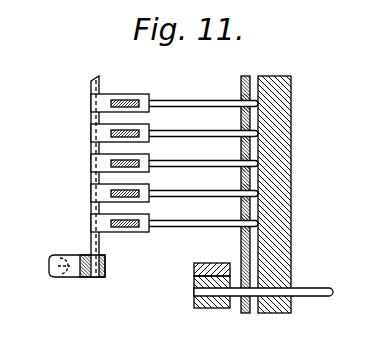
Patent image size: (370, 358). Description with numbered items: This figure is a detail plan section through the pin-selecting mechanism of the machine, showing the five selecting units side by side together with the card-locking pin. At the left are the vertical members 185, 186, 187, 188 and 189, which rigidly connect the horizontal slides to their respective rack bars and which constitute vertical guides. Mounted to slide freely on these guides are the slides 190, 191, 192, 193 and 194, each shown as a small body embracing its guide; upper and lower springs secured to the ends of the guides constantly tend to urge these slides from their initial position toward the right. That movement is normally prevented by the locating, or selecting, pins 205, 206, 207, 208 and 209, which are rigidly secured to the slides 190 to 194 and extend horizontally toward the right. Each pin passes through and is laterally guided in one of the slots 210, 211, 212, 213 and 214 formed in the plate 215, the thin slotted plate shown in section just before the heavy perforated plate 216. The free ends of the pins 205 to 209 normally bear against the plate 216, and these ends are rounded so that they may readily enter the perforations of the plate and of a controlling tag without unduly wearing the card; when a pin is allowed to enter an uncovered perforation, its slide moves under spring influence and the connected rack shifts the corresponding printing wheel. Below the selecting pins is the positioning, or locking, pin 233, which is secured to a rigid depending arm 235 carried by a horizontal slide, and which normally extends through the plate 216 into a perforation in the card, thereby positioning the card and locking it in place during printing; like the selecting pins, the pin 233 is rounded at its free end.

The vertical member 185 is at (134, 233).
The vertical member 186 is at (134, 203).
The vertical member 187 is at (134, 173).
The vertical member 188 is at (134, 143).
The vertical member 189 is at (134, 113).
The slide 190 is at (90, 224).
The slide 191 is at (90, 194).
The slide 192 is at (90, 164).
The slide 193 is at (90, 134).
The slide 194 is at (90, 104).
The locating pin 205 is at (197, 219).
The locating pin 206 is at (197, 189).
The locating pin 207 is at (197, 158).
The locating pin 208 is at (197, 128).
The locating pin 209 is at (197, 98).
The slot 210 is at (242, 219).
The slot 211 is at (242, 188).
The slot 212 is at (242, 157).
The slot 213 is at (242, 127).
The slot 214 is at (242, 96).
The plate 215 is at (250, 209).
The plate 216 is at (258, 168).
The positioning pin 233 is at (303, 294).
The depending arm 235 is at (205, 300).